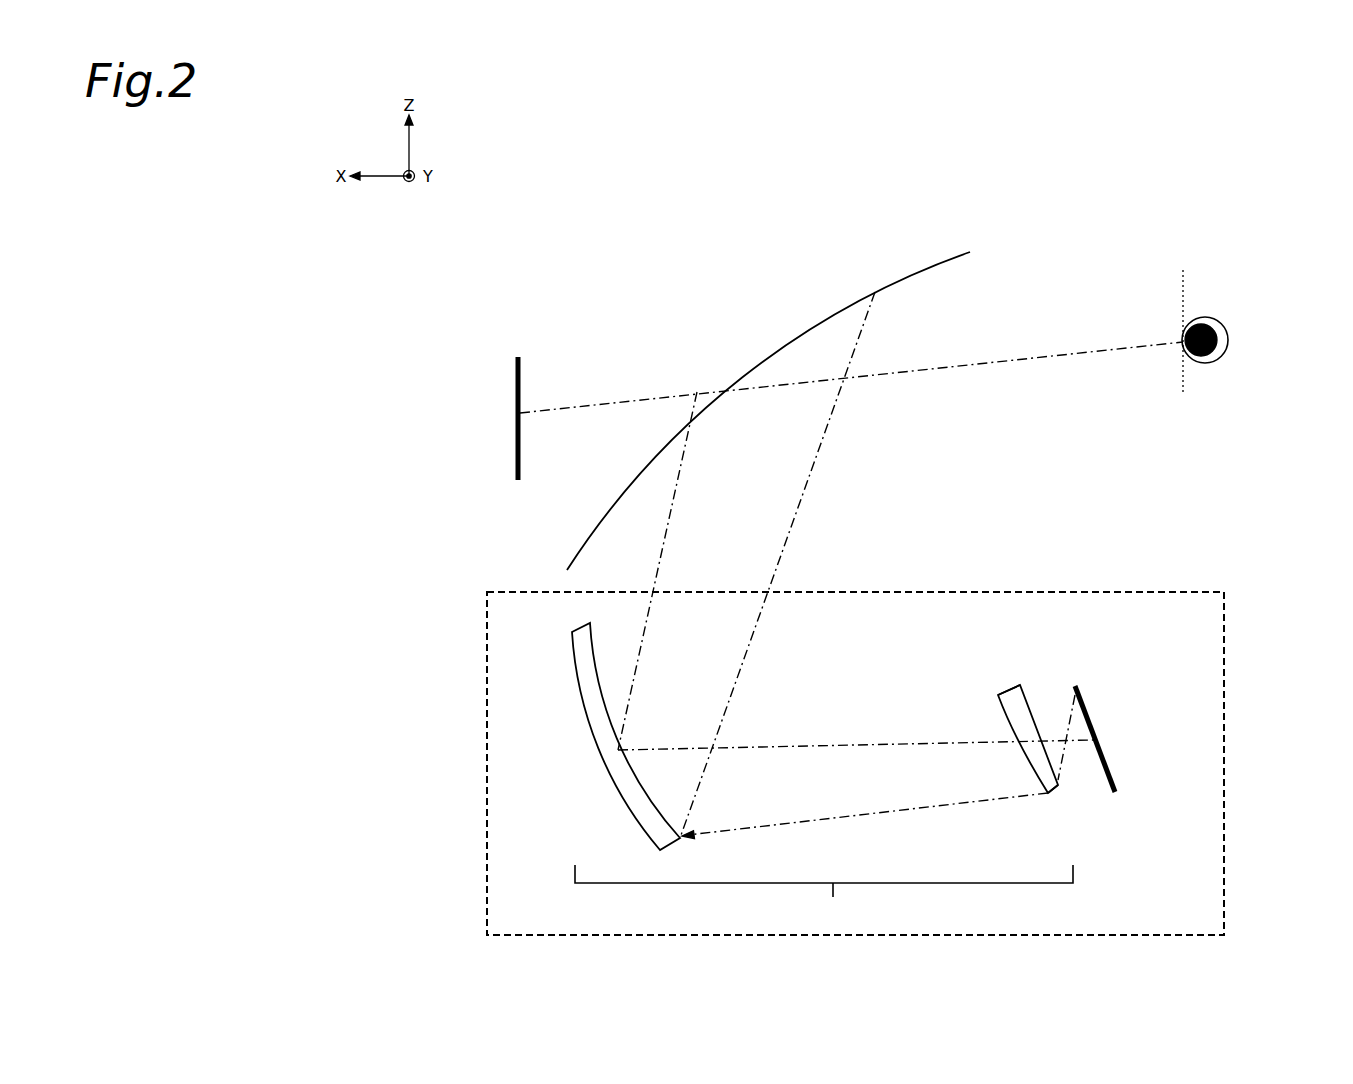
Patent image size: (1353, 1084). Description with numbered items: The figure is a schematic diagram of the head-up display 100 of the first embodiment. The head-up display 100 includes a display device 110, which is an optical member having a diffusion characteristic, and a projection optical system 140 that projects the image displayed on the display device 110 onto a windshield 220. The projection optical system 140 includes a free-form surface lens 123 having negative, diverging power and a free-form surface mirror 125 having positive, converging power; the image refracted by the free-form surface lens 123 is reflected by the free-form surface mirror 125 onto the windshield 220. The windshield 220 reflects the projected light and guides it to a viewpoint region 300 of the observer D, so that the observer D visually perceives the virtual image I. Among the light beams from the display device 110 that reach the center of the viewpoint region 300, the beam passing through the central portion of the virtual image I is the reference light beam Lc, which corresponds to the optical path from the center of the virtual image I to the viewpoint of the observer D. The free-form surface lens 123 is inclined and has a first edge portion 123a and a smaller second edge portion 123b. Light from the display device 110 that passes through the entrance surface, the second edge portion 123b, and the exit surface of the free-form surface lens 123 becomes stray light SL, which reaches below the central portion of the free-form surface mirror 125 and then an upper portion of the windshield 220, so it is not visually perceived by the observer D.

The head-up display 100 is at (1225, 608).
The display device 110 is at (1110, 763).
The free-form surface lens 123 is at (1023, 693).
The first edge portion 123a is at (1010, 685).
The second edge portion 123b is at (1053, 793).
The free-form surface mirror 125 is at (582, 712).
The projection optical system 140 is at (824, 896).
The windshield 220 is at (887, 282).
The viewpoint region 300 is at (1185, 300).
The observer D is at (1232, 337).
The virtual image I is at (517, 397).
The reference light beam Lc is at (913, 370).
The stray light SL is at (810, 473).